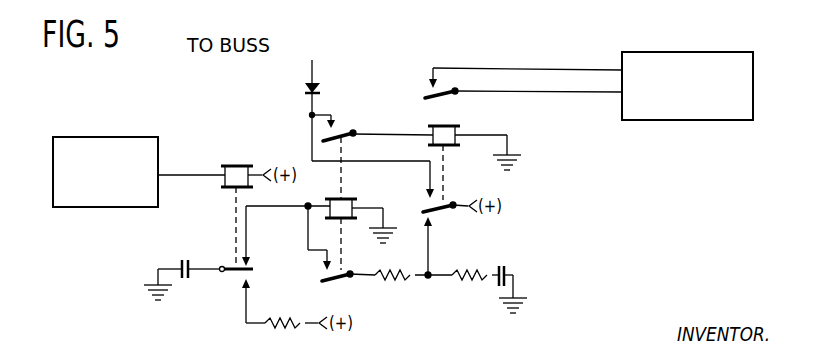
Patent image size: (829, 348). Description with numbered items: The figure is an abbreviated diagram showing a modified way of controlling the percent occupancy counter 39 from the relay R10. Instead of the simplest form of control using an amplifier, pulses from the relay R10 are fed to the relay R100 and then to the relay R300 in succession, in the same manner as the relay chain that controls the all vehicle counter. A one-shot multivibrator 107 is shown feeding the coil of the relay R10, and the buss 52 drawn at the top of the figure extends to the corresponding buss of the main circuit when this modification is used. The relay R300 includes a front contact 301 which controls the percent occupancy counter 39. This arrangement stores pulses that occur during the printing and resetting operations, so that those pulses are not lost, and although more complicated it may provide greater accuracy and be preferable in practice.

The one-shot multivibrator 107 is at (122, 128).
The buss 52 is at (307, 68).
The front contact 301 is at (425, 98).
The percent occupancy counter 39 is at (709, 53).
The relay R10 is at (236, 163).
The relay R100 is at (340, 198).
The relay R300 is at (443, 126).